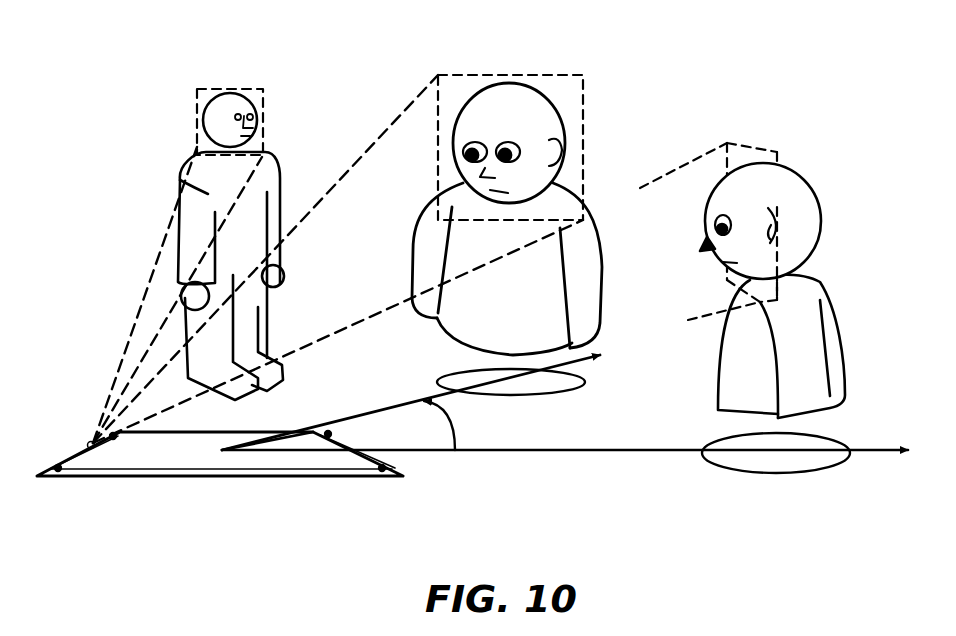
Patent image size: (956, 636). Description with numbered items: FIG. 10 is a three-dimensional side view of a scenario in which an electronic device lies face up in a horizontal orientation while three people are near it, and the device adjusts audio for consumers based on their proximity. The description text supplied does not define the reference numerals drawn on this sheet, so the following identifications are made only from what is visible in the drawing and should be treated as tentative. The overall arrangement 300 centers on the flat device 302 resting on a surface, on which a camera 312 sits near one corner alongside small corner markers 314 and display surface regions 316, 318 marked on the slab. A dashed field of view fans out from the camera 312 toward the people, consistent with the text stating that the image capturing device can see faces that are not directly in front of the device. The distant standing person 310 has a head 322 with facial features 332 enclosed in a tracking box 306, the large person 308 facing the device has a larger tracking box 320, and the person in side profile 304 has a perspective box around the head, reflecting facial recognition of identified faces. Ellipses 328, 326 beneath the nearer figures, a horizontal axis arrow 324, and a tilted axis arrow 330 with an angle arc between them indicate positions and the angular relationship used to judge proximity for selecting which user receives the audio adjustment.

The head tracking system 300 is at (55, 458).
The tablet device 302 is at (340, 467).
The user head in side profile 304 is at (518, 178).
The head tracking bounding box 306 is at (240, 107).
The user facing device 308 is at (412, 262).
The user standing at distance 310 is at (182, 225).
The camera 312 is at (94, 447).
The corner markers 314 is at (63, 463).
The display surface 316 is at (145, 457).
The display surface region 318 is at (195, 455).
The head tracking bounding box 320 is at (438, 150).
The user head 322 is at (198, 125).
The horizontal axis 324 is at (827, 467).
The position ellipse 326 is at (748, 448).
The position ellipse 328 is at (440, 372).
The tilted axis 330 is at (372, 410).
The user face 332 is at (264, 103).